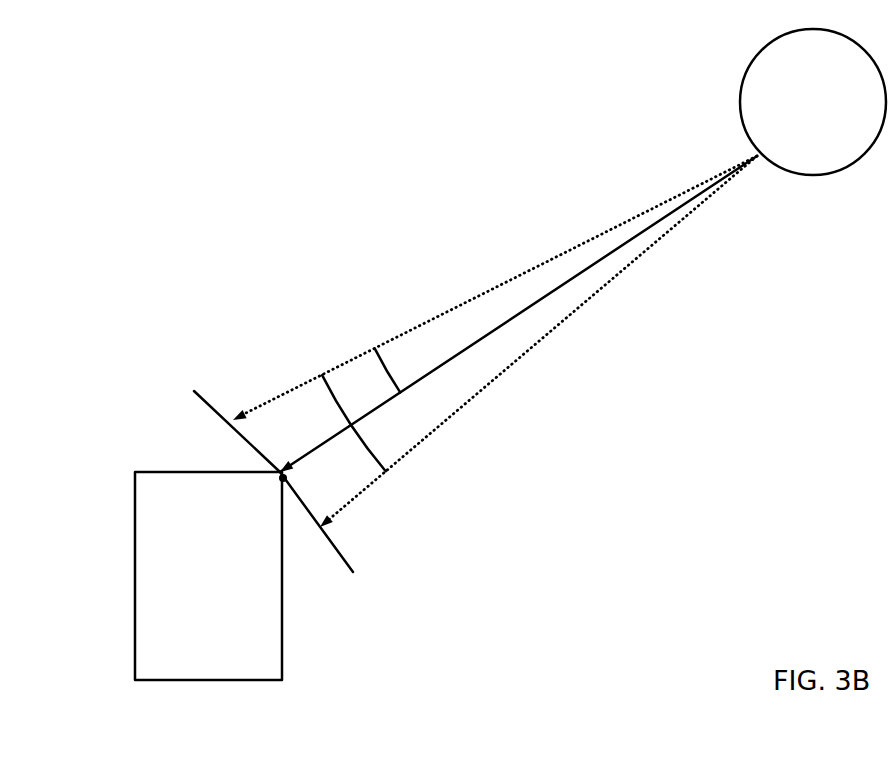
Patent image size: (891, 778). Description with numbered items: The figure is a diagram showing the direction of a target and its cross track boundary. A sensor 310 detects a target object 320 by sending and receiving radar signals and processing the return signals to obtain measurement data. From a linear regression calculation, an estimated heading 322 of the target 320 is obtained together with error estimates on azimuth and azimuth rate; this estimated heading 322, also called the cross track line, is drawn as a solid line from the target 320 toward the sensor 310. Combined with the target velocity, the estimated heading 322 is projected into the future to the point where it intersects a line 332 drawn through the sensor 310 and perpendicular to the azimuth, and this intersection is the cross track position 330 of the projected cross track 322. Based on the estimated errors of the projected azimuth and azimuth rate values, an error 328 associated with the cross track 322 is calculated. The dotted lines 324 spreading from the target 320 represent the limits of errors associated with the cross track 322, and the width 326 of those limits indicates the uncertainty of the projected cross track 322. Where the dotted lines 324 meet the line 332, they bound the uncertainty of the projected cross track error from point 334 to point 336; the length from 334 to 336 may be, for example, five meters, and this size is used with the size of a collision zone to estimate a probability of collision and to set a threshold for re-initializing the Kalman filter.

The sensor 310 is at (187, 607).
The target object 320 is at (793, 133).
The estimated heading 322 is at (512, 320).
The dotted lines 324 is at (582, 296).
The width of limits 326 is at (365, 446).
The cross track position error 328 is at (383, 362).
The cross track position 330 is at (283, 483).
The line through the sensor perpendicular to the azimuth 332 is at (182, 395).
The first limit of projected cross track error 334 is at (226, 405).
The second limit of projected cross track error 336 is at (316, 542).